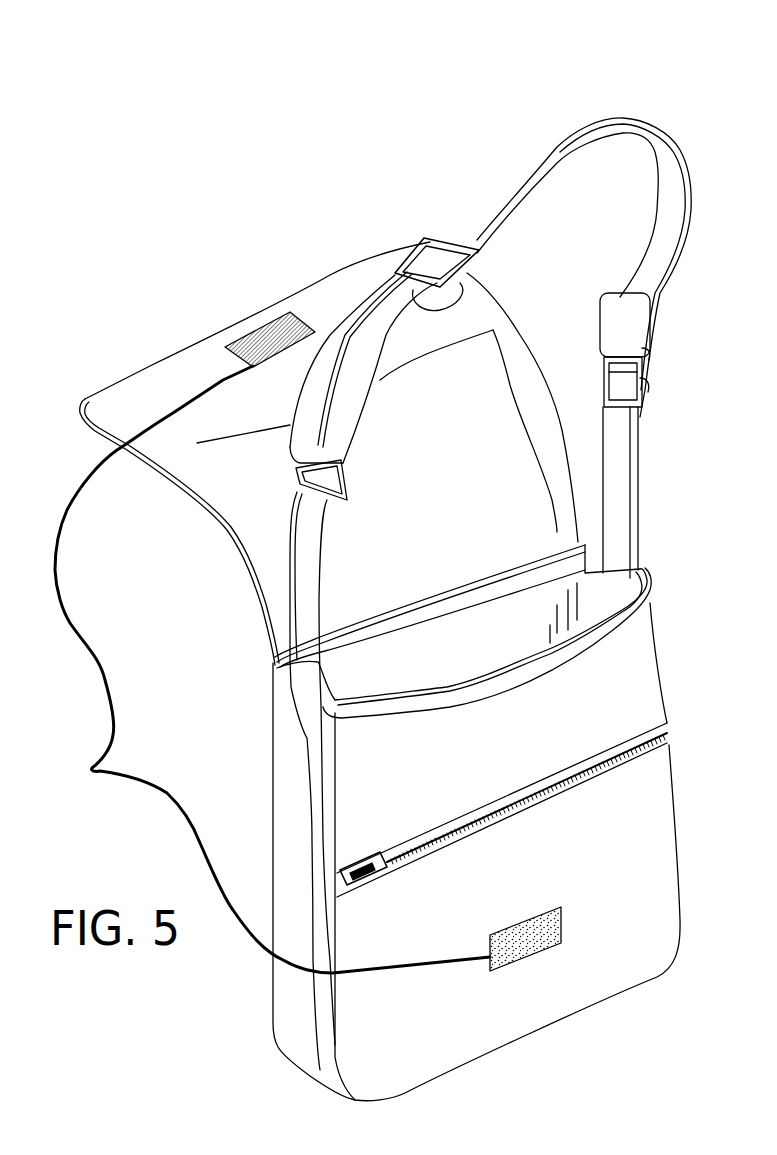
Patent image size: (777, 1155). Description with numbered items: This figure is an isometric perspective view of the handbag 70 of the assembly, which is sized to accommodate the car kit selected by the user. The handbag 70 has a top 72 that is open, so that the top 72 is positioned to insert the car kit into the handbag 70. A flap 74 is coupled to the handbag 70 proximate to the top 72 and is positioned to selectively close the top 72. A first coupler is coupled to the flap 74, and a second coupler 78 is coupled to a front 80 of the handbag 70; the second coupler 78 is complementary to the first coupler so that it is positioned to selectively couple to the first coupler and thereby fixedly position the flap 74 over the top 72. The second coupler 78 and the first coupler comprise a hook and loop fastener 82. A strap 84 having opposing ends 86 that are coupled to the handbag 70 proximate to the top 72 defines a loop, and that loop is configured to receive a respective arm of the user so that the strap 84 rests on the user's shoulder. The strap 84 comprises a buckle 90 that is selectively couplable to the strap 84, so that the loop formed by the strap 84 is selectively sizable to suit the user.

The handbag 70 is at (253, 178).
The top 72 is at (247, 338).
The flap 74 is at (120, 387).
The second coupler 78 is at (537, 940).
The front 80 is at (635, 850).
The hook and loop fastener 82 is at (86, 768).
The strap 84 is at (638, 123).
The opposing ends 86 is at (258, 712).
The buckle 90 is at (446, 233).